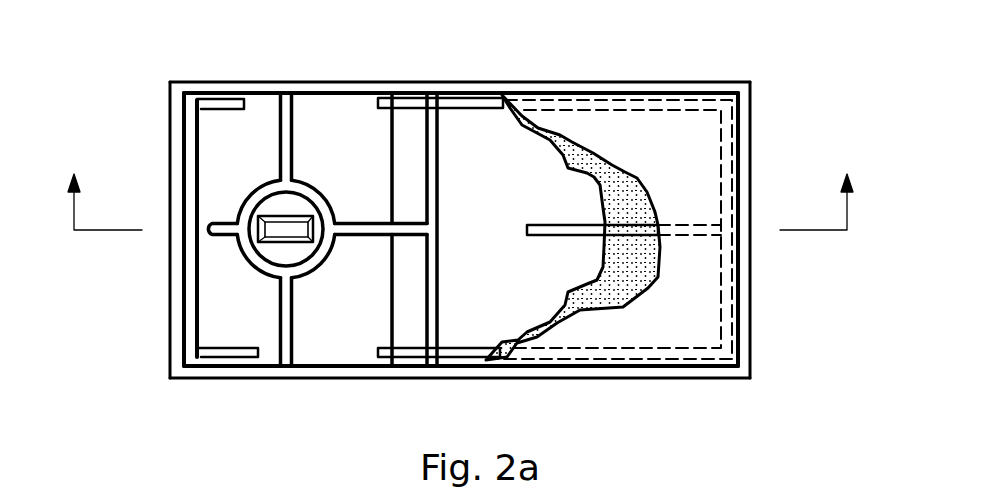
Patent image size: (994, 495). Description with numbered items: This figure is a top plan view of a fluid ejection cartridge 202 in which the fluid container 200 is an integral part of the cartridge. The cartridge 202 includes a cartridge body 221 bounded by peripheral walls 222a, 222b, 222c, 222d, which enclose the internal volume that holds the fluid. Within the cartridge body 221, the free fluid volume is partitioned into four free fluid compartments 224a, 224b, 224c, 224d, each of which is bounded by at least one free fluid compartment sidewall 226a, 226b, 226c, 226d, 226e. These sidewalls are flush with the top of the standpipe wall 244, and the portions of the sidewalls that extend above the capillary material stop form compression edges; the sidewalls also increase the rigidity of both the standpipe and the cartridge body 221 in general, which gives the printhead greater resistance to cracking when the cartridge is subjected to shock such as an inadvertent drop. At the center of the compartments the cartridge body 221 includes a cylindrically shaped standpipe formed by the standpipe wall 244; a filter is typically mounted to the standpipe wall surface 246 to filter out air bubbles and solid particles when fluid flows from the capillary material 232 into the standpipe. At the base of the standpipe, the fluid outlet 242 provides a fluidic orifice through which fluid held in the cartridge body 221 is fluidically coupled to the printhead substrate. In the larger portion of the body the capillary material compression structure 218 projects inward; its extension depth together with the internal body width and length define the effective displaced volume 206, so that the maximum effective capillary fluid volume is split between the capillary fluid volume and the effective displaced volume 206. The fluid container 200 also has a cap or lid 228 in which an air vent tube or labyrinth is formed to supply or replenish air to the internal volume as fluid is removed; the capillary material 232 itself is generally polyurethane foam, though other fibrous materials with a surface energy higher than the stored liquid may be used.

The fluid container 200 is at (806, 332).
The fluid ejection cartridge 202 is at (737, 62).
The effective displaced volume 206 is at (578, 211).
The capillary material compression structure 218 is at (193, 103).
The cartridge body 221 is at (677, 370).
The peripheral wall 222a is at (328, 88).
The peripheral wall 222b is at (747, 122).
The peripheral wall 222c is at (330, 372).
The peripheral wall 222d is at (176, 117).
The free fluid compartment 224a is at (268, 143).
The free fluid compartment 224b is at (367, 143).
The free fluid compartment 224c is at (367, 336).
The free fluid compartment 224d is at (265, 335).
The free fluid compartment sidewall 226a is at (227, 232).
The free fluid compartment sidewall 226b is at (288, 97).
The free fluid compartment sidewall 226c is at (400, 222).
The free fluid compartment sidewall 226d is at (288, 366).
The free fluid compartment sidewall 226e is at (434, 318).
The cartridge lid 228 is at (630, 323).
The capillary material 232 is at (568, 147).
The fluid outlet 242 is at (292, 228).
The standpipe wall 244 is at (247, 253).
The standpipe wall surface 246 is at (252, 204).